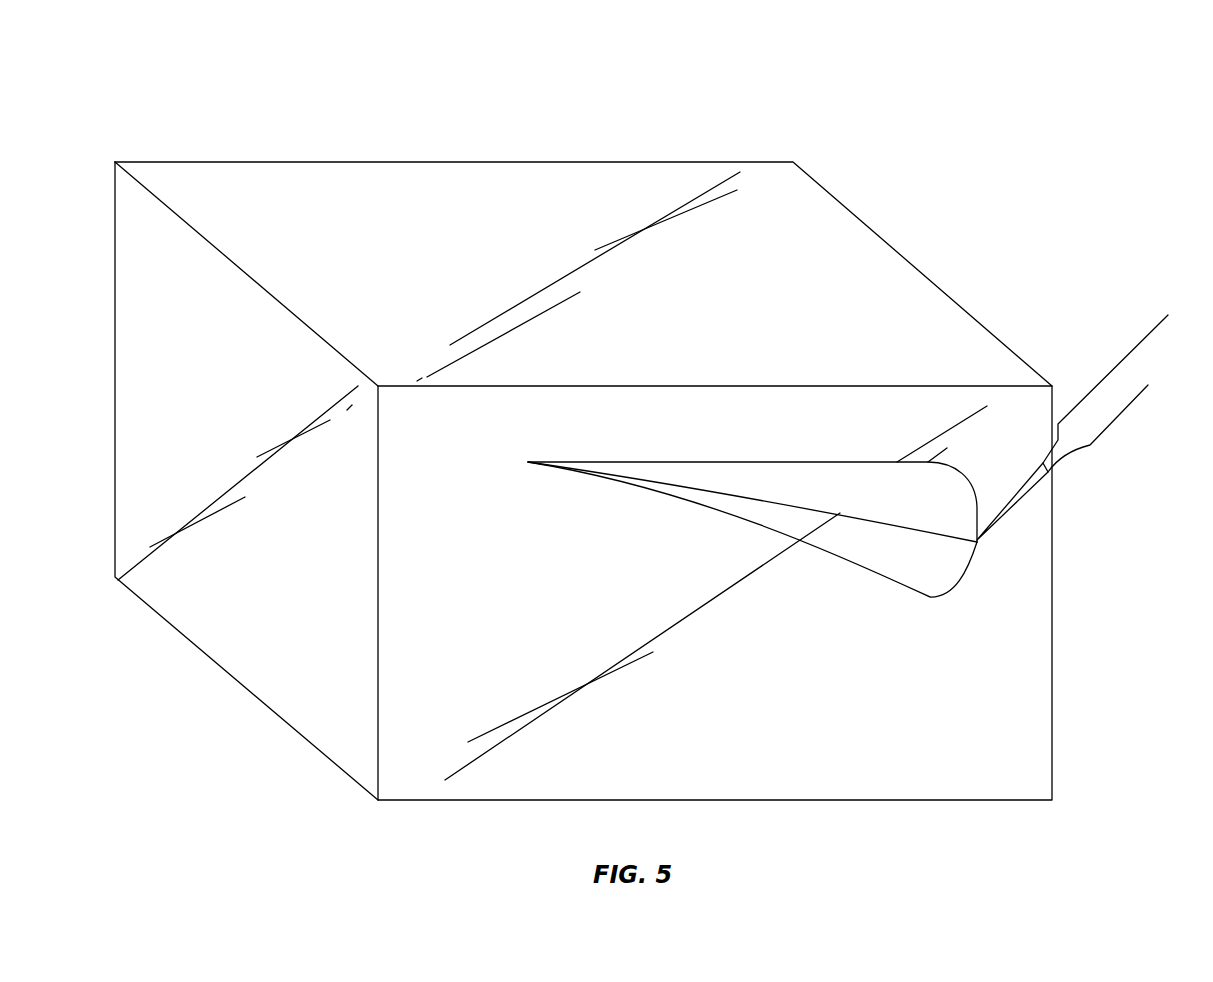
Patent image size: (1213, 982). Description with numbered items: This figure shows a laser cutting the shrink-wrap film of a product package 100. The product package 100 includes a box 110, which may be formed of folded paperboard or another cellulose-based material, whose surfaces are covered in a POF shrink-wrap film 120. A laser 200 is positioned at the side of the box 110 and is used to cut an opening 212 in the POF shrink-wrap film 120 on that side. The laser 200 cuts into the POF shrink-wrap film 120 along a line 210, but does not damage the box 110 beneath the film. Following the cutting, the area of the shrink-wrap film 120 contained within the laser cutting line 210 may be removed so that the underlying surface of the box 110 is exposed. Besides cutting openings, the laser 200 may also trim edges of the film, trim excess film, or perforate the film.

The product package 100 is at (835, 86).
The box 110 is at (1053, 685).
The POF shrink-wrap film 120 is at (238, 560).
The laser 200 is at (1123, 350).
The line 210 is at (635, 462).
The opening 212 is at (810, 487).